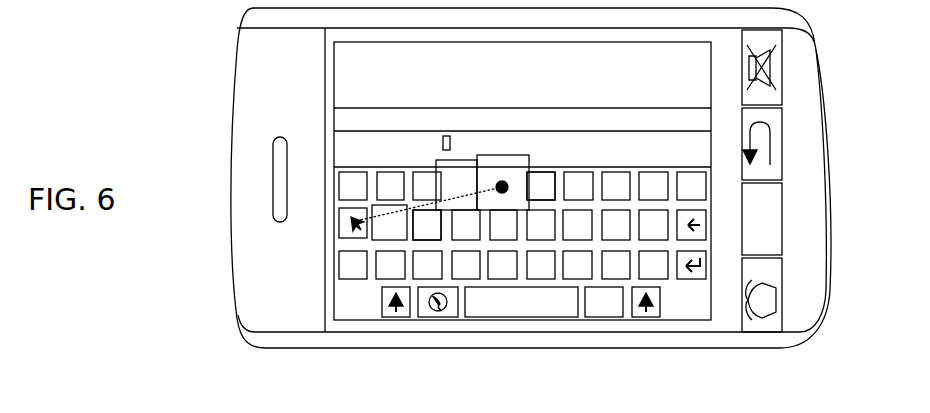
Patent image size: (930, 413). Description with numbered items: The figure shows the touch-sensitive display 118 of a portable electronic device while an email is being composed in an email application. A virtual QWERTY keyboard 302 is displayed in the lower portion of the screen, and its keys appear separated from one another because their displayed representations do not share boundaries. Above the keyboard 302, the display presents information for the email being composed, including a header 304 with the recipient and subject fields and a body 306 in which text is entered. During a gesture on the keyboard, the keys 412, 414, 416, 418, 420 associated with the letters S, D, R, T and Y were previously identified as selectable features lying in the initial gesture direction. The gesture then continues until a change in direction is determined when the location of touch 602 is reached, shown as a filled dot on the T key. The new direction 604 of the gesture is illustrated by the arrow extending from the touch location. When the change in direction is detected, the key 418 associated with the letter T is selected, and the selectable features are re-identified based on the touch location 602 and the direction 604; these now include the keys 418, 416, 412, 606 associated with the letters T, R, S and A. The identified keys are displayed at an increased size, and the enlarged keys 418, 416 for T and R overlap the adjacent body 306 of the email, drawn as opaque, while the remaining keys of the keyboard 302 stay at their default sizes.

The touch-sensitive display 118 is at (710, 150).
The virtual QWERTY keyboard 302 is at (670, 290).
The header 304 is at (360, 70).
The body 306 is at (380, 153).
The key associated with the letter S 412 is at (392, 242).
The key associated with the letter D 414 is at (427, 242).
The key associated with the letter R 416 is at (456, 212).
The key associated with the letter T 418 is at (523, 212).
The key associated with the letter Y 420 is at (541, 201).
The location of touch 602 is at (497, 188).
The direction of the gesture 604 is at (404, 207).
The key associated with the letter A 606 is at (360, 240).